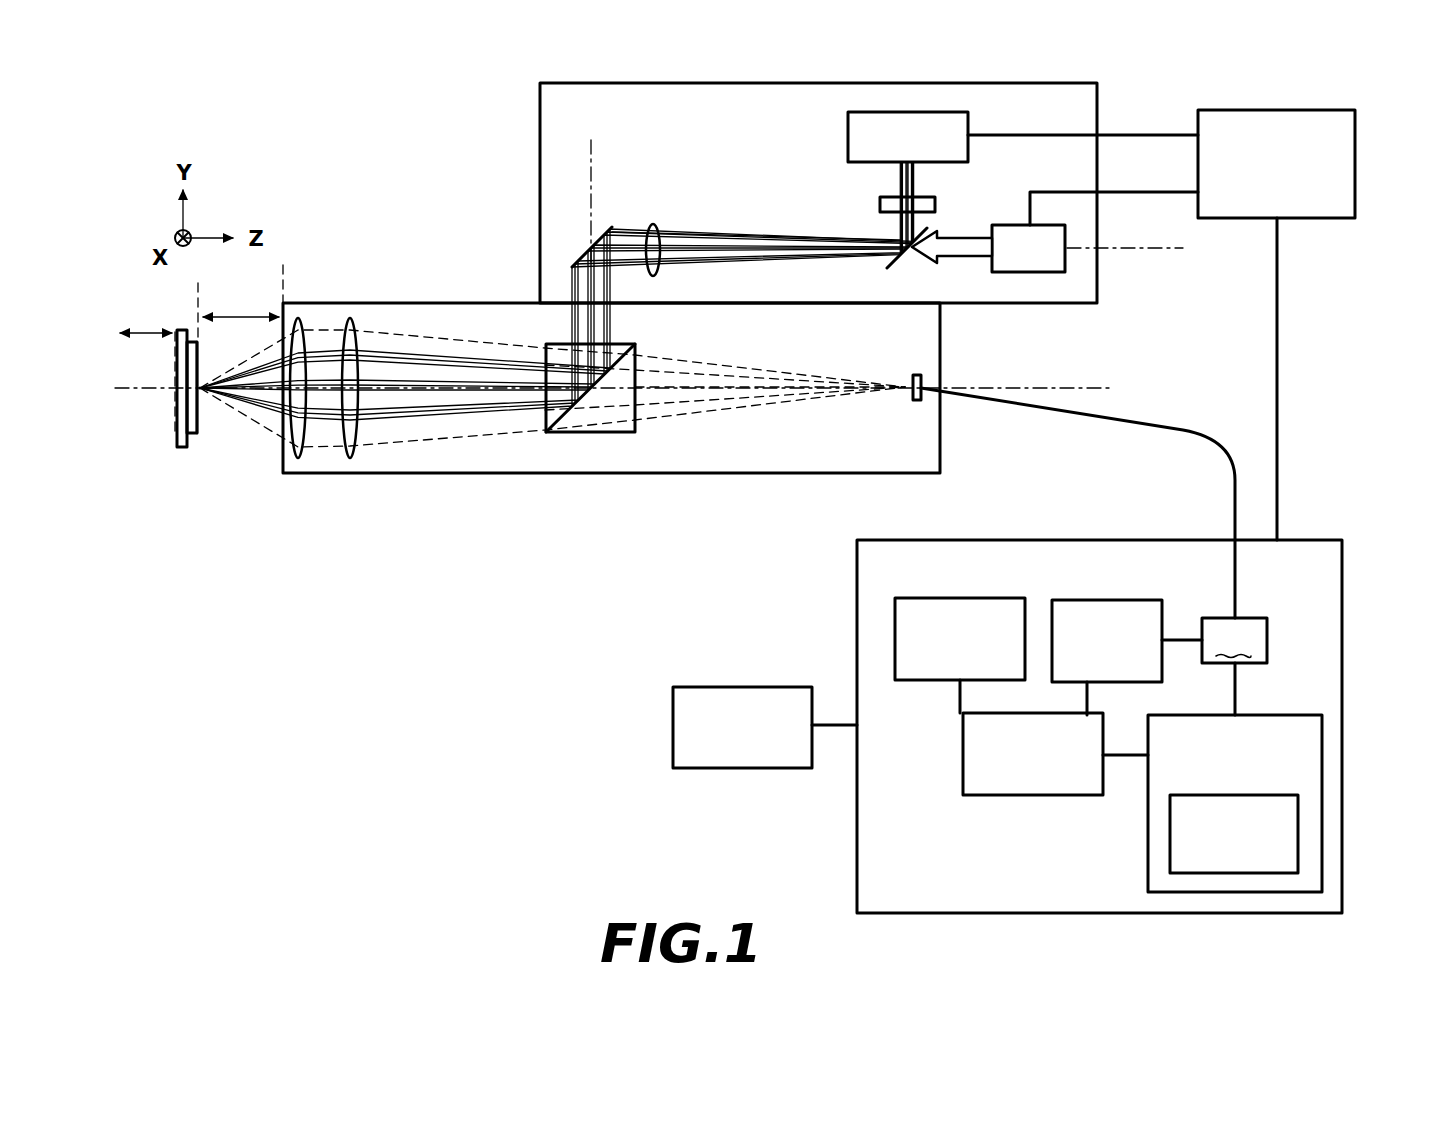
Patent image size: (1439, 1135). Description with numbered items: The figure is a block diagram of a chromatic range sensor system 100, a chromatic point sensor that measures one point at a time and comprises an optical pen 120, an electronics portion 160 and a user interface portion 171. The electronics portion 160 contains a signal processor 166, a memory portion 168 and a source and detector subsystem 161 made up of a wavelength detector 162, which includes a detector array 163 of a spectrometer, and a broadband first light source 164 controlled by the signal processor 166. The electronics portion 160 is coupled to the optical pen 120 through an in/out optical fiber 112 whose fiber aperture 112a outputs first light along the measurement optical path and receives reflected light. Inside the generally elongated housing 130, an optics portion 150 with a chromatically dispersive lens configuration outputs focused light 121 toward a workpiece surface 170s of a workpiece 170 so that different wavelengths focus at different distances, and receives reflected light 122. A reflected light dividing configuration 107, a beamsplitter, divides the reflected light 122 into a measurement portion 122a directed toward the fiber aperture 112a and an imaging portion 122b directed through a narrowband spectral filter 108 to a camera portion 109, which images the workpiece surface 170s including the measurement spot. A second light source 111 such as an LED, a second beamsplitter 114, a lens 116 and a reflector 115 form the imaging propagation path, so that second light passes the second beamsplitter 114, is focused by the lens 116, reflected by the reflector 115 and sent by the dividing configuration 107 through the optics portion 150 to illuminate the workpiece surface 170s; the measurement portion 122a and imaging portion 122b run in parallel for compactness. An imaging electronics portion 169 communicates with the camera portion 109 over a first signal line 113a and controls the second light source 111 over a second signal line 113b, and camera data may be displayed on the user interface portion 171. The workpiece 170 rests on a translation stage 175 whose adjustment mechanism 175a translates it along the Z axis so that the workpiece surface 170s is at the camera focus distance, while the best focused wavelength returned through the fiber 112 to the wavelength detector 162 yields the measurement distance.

The chromatic range sensor (CRS) system 100 is at (1375, 465).
The reflected light dividing configuration 107 is at (636, 430).
The narrowband spectral filter 108 is at (880, 204).
The camera portion 109 is at (848, 138).
The second light source 111 is at (1022, 225).
The in/out optical fiber 112 is at (1150, 427).
The fiber aperture 112a is at (921, 399).
The first signal line 113a is at (1115, 136).
The second signal line 113b is at (1115, 194).
The second beamsplitter 114 is at (900, 262).
The reflector 115 is at (583, 253).
The lens 116 is at (654, 224).
The optical pen 120 is at (290, 76).
The focused light 121 is at (268, 436).
The reflected light 122 is at (455, 334).
The measurement portion 122a is at (742, 408).
The imaging portion 122b is at (725, 234).
The housing 130 is at (535, 109).
The optics portion 150 is at (373, 483).
The electronics portion 160 is at (1320, 540).
The source and detector subsystem 161 is at (1234, 666).
The wavelength detector 162 is at (1162, 768).
The detector array 163 is at (1177, 858).
The first light source 164 is at (1107, 600).
The signal processor 166 is at (963, 775).
The memory portion 168 is at (945, 680).
The imaging electronics portion 169 is at (1302, 110).
The workpiece 170 is at (187, 448).
The workpiece surface 170s is at (199, 433).
The user interface portion 171 is at (728, 687).
The translation stage 175 is at (177, 420).
The adjustment mechanism 175a is at (147, 366).